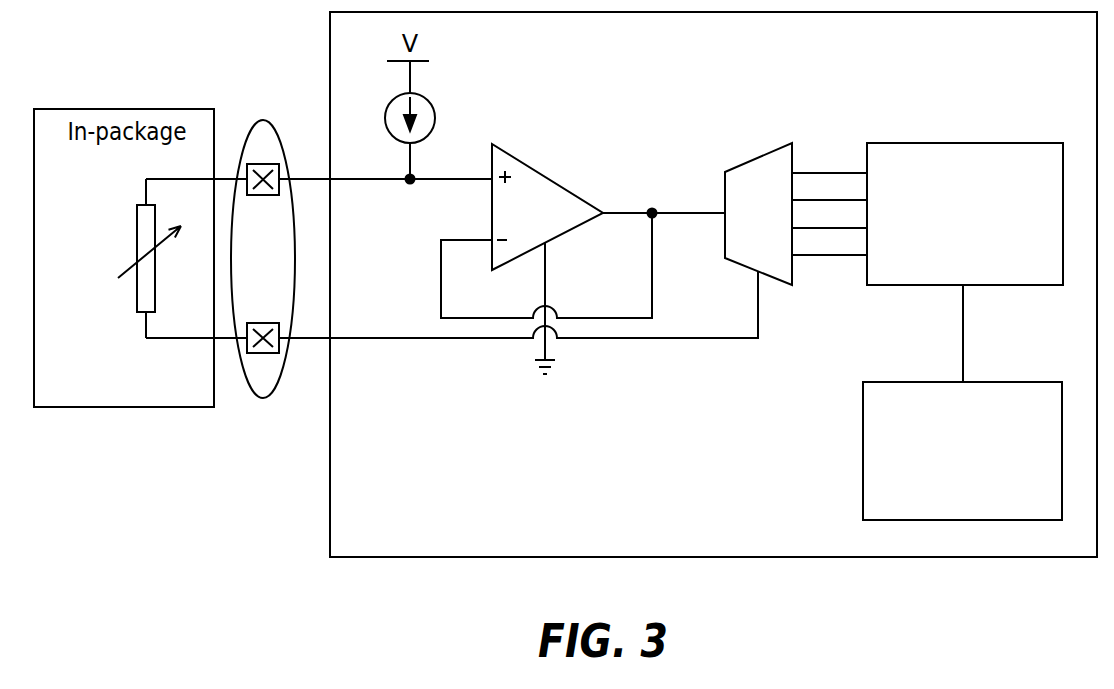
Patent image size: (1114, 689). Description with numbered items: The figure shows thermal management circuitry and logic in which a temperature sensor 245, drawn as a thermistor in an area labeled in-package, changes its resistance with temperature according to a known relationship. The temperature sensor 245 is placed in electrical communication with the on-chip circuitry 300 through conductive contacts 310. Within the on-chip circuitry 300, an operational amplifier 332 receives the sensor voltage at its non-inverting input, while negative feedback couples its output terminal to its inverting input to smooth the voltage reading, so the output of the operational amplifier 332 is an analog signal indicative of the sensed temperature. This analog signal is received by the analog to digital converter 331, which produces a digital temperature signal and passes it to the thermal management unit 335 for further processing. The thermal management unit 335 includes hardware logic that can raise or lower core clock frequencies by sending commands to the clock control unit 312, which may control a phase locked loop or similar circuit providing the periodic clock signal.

The temperature sensor 245 is at (133, 305).
The conductive contacts 310 is at (265, 398).
The on-chip circuitry 300 is at (972, 57).
The operational amplifier 332 is at (505, 225).
The analog to digital converter 331 is at (742, 263).
The thermal management unit 335 is at (940, 258).
The clock control unit 312 is at (987, 478).